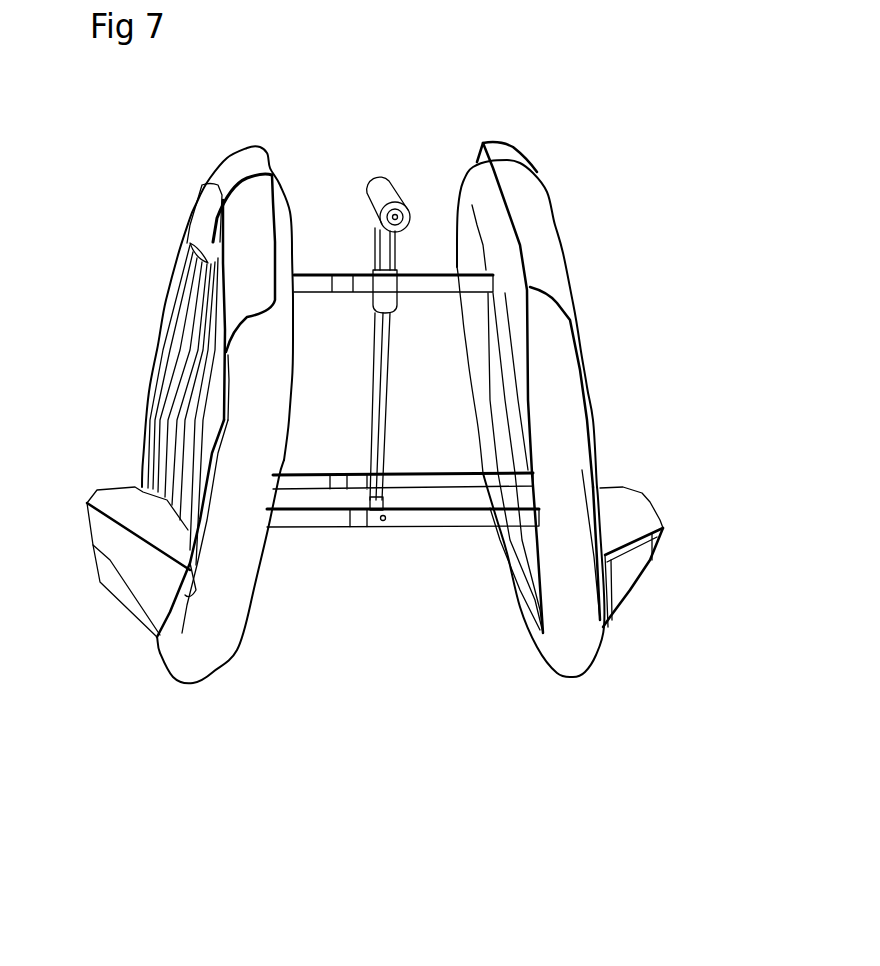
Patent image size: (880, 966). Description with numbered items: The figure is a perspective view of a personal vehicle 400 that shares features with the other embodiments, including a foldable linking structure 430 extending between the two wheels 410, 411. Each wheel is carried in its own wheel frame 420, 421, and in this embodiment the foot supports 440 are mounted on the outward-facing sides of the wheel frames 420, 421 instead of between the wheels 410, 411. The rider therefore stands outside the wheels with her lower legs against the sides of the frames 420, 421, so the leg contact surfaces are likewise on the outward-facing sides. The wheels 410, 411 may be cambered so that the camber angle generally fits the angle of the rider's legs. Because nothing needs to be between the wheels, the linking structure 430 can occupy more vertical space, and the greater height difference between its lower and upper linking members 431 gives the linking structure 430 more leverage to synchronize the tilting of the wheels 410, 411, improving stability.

The vehicle 400 is at (452, 792).
The wheel 410 is at (198, 670).
The wheel 411 is at (558, 667).
The wheel frame 420 is at (160, 383).
The wheel frame 421 is at (543, 235).
The foldable linking structure 430 is at (392, 590).
The linking member 431 is at (480, 520).
The foot support 440 is at (166, 533).